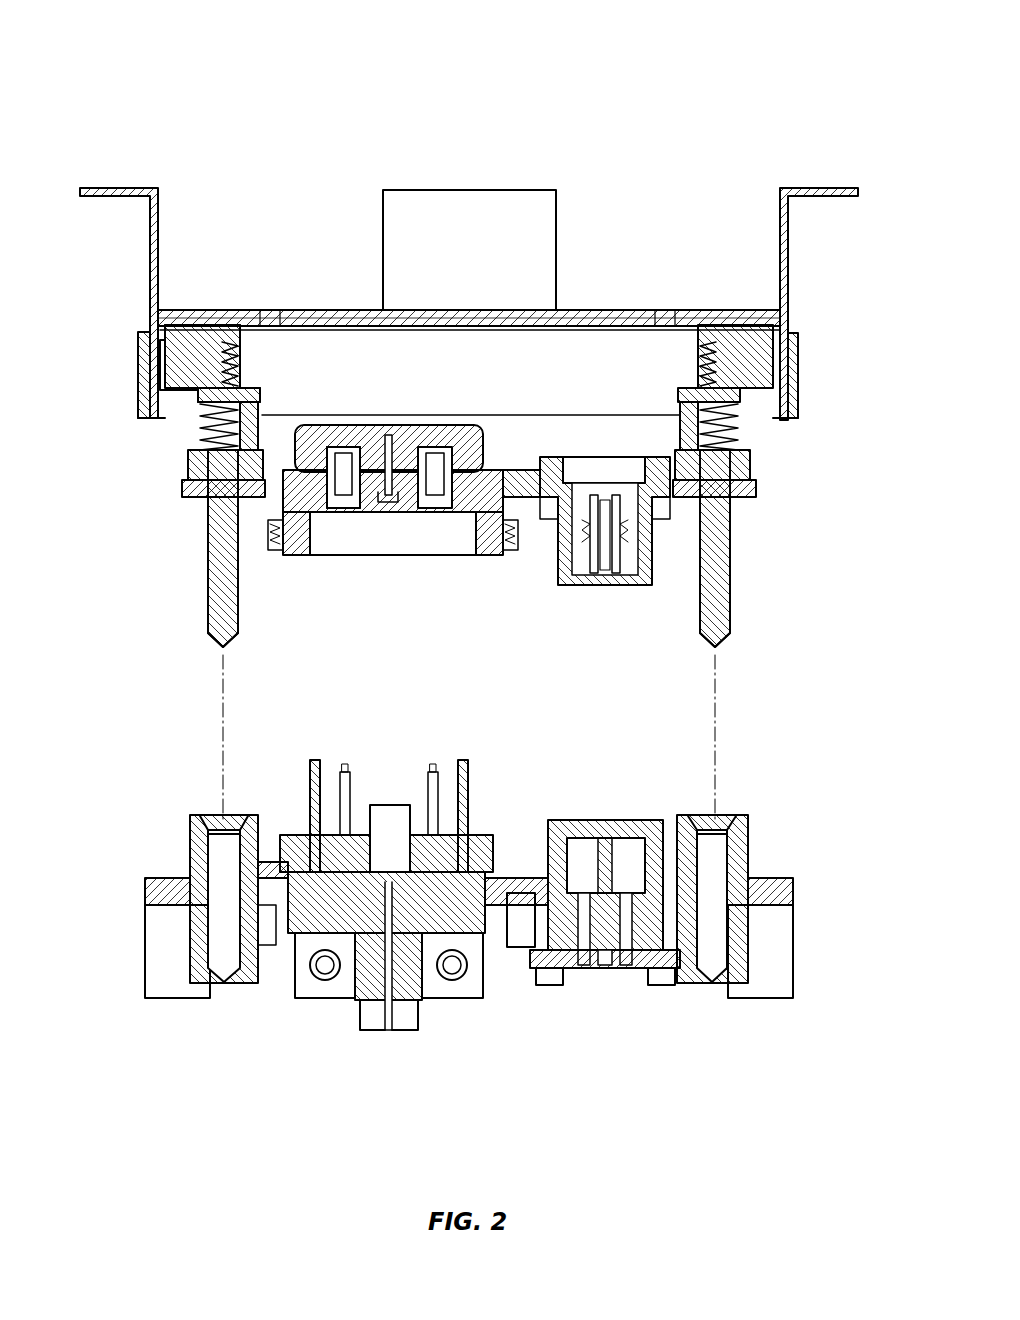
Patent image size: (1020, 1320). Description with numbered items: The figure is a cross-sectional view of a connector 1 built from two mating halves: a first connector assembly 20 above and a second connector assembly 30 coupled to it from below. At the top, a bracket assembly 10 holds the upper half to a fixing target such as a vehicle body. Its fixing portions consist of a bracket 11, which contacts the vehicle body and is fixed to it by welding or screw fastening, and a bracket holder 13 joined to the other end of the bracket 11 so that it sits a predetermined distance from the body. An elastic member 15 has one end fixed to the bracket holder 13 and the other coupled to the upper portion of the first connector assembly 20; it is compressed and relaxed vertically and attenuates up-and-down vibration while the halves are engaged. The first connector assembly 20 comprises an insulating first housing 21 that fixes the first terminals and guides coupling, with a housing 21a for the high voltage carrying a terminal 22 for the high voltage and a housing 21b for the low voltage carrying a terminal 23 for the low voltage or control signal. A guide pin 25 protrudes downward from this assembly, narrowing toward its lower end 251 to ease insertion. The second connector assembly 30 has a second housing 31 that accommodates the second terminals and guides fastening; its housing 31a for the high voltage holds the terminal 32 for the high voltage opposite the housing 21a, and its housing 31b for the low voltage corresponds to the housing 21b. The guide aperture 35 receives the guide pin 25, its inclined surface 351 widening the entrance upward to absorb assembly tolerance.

The connector 1 is at (266, 108).
The bracket assembly 10 is at (420, 160).
The bracket 11 is at (118, 186).
The bracket holder 13 is at (608, 350).
The elastic member 15 is at (215, 430).
The first connector assembly 20 is at (768, 520).
The first housing 21 is at (393, 430).
The housing for the high voltage 21a is at (388, 540).
The housing for the low voltage 21b is at (582, 551).
The terminal for the high voltage 22 is at (340, 506).
The terminal for the low voltage 23 is at (614, 572).
The guide pin 25 is at (214, 568).
The bolt tip 251 is at (212, 650).
The second connector assembly 30 is at (596, 1040).
The second housing 31 is at (518, 948).
The housing for the high voltage 31a is at (300, 935).
The housing for the low voltage 31b is at (628, 866).
The terminal for the high voltage 32 is at (432, 764).
The guide aperture 35 is at (430, 899).
The inclined surface 351 is at (206, 818).